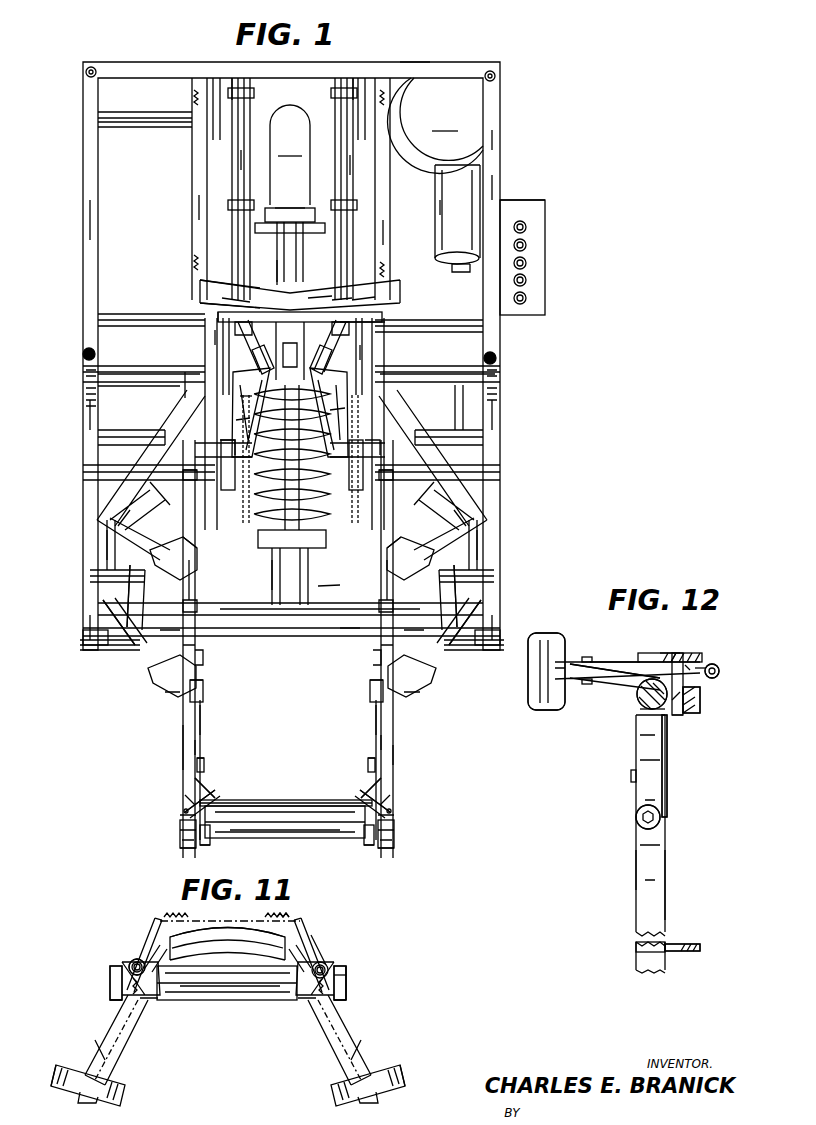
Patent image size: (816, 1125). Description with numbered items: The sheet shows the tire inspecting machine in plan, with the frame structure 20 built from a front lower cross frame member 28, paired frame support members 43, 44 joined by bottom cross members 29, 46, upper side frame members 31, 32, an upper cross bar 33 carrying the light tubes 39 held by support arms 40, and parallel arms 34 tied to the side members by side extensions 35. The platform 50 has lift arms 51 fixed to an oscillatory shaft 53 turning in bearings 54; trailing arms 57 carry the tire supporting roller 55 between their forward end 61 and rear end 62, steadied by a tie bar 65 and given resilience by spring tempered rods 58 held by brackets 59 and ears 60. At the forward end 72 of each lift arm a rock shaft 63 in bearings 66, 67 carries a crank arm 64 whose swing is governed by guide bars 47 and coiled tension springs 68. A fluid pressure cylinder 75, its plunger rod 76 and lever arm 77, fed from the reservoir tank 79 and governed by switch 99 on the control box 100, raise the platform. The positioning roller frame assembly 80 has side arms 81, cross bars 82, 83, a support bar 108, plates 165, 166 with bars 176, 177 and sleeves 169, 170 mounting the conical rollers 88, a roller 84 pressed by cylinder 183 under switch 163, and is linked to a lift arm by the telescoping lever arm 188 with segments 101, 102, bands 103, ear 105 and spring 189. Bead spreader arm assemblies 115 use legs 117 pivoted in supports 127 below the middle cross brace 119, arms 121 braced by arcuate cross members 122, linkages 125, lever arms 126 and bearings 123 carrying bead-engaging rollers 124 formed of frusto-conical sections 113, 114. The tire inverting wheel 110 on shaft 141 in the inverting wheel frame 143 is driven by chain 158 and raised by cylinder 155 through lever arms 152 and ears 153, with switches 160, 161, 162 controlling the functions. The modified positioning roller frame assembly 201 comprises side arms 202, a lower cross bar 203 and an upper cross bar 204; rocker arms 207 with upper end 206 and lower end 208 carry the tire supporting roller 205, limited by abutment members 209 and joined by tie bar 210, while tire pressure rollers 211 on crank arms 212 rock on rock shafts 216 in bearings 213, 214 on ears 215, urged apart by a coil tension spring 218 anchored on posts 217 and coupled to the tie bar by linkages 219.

In FIG. 1, the frame structure 20 is at (502, 142).
In FIG. 1, the front lower cross frame member 28 is at (346, 640).
In FIG. 1, the bottom cross member 29 is at (130, 315).
In FIG. 1, the upper side frame member 31 is at (85, 413).
In FIG. 1, the upper side frame member 32 is at (86, 218).
In FIG. 1, the upper cross bar 33 is at (414, 70).
In FIG. 1, the parallel arm 34 is at (192, 208).
In FIG. 1, the side extension 35 is at (126, 378).
In FIG. 1, the tube 39 is at (85, 76).
In FIG. 1, the support arm 40 is at (84, 360).
In FIG. 1, the frame support member 43 is at (268, 597).
In FIG. 1, the frame support member 44 is at (329, 576).
In FIG. 1, the bottom cross member 46 is at (132, 128).
In FIG. 1, the guide bar 47 is at (214, 796).
In FIG. 1, the platform 50 is at (180, 736).
In FIG. 1, the lift arm 51 is at (181, 758).
In FIG. 1, the oscillatory shaft 53 is at (345, 616).
In FIG. 1, the bearing 54 is at (90, 622).
In FIG. 1, the tire supporting roller 55 is at (295, 832).
In FIG. 1, the trailing arm 57 is at (203, 778).
In FIG. 1, the spring tempered rod 58 is at (200, 717).
In FIG. 1, the bracket 59 is at (204, 690).
In FIG. 1, the ear 60 is at (204, 766).
In FIG. 1, the forward end 61 is at (202, 846).
In FIG. 1, the rear end 62 is at (193, 745).
In FIG. 1, the rock shaft 63 is at (180, 845).
In FIG. 1, the crank arm 64 is at (180, 831).
In FIG. 1, the tie bar 65 is at (285, 803).
In FIG. 1, the bearing 66 is at (178, 817).
In FIG. 1, the bearing 67 is at (186, 855).
In FIG. 1, the coiled tension spring 68 is at (185, 797).
In FIG. 1, the forward end 72 is at (185, 811).
In FIG. 1, the fluid pressure cylinder 75 is at (468, 207).
In FIG. 1, the piston-equipped plunger rod 76 is at (462, 262).
In FIG. 1, the lever arm 77 is at (466, 410).
In FIG. 1, the reservoir tank 79 is at (445, 121).
In FIG. 1, the positioning roller frame assembly 80 is at (222, 290).
In FIG. 1, the side arm 81 is at (215, 305).
In FIG. 1, the cross bar 82 is at (215, 336).
In FIG. 1, the cross bar 83 is at (341, 290).
In FIG. 1, the tire supporting roller 84 is at (245, 387).
In FIG. 1, the conical roller 88 is at (290, 403).
In FIG. 1, the switch 99 is at (527, 298).
In FIG. 1, the control box 100 is at (545, 212).
In FIG. 1, the segment 101 is at (196, 580).
In FIG. 1, the segment 102 is at (205, 657).
In FIG. 1, the band 103 is at (230, 550).
In FIG. 1, the ear 105 is at (178, 702).
In FIG. 1, the support bar 108 is at (288, 285).
In FIG. 1, the tire inverting wheel 110 is at (268, 560).
In FIG. 1, the frusto-conical section 113 is at (170, 640).
In FIG. 1, the frusto-conical section 114 is at (178, 550).
In FIG. 1, the bead spreader arm assembly 115 is at (107, 545).
In FIG. 1, the leg 117 is at (120, 530).
In FIG. 1, the middle cross brace 119 is at (160, 490).
In FIG. 1, the arm 121 is at (100, 560).
In FIG. 1, the arcuate cross member 122 is at (115, 576).
In FIG. 1, the bearing 123 is at (160, 580).
In FIG. 1, the bead-engaging roller 124 is at (195, 545).
In FIG. 1, the linkage 125 is at (120, 592).
In FIG. 1, the lever arm 126 is at (88, 478).
In FIG. 1, the support 127 is at (86, 440).
In FIG. 1, the shaft 141 is at (372, 448).
In FIG. 1, the inverting wheel frame 143 is at (139, 392).
In FIG. 1, the lever arm 152 is at (243, 155).
In FIG. 1, the ear 153 is at (240, 78).
In FIG. 1, the fluid-pressure cylinder 155 is at (290, 147).
In FIG. 1, the sprocket chain 158 is at (225, 447).
In FIG. 1, the switch 160 is at (527, 280).
In FIG. 1, the switch 161 is at (527, 263).
In FIG. 1, the switch 162 is at (527, 245).
In FIG. 1, the switch 163 is at (527, 227).
In FIG. 1, the elongated plate 165 is at (363, 290).
In FIG. 1, the elongated plate 166 is at (215, 320).
In FIG. 1, the sleeve 169 is at (370, 350).
In FIG. 1, the sleeve 170 is at (200, 378).
In FIG. 1, the bar 176 is at (320, 290).
In FIG. 1, the bar 177 is at (235, 291).
In FIG. 1, the fluid pressure cylinder 183 is at (288, 200).
In FIG. 1, the telescoping lever arm 188 is at (197, 650).
In FIG. 1, the coiled tension spring 189 is at (193, 97).
In FIG. 11, the positioning roller frame assembly 201 is at (348, 988).
In FIG. 12, the positioning roller frame assembly 201 is at (635, 870).
In FIG. 11, the side arm 202 is at (110, 982).
In FIG. 12, the side arm 202 is at (635, 895).
In FIG. 12, the lower cross bar 203 is at (690, 947).
In FIG. 11, the upper cross bar 204 is at (240, 938).
In FIG. 12, the upper cross bar 204 is at (697, 656).
In FIG. 11, the tire supporting roller 205 is at (226, 1002).
In FIG. 12, the tire supporting roller 205 is at (643, 700).
In FIG. 12, the upper end 206 is at (645, 712).
In FIG. 11, the rocker arm 207 is at (150, 1002).
In FIG. 12, the rocker arm 207 is at (670, 755).
In FIG. 12, the lower end 208 is at (666, 817).
In FIG. 11, the abutment member 209 is at (115, 1000).
In FIG. 12, the abutment member 209 is at (633, 777).
In FIG. 11, the tie bar 210 is at (322, 946).
In FIG. 12, the tie bar 210 is at (701, 705).
In FIG. 11, the tire pressure roller 211 is at (58, 1088).
In FIG. 12, the tire pressure roller 211 is at (534, 698).
In FIG. 11, the crank arm 212 is at (95, 1055).
In FIG. 12, the crank arm 212 is at (610, 663).
In FIG. 11, the bearing 213 is at (128, 968).
In FIG. 12, the bearing 213 is at (668, 652).
In FIG. 11, the bearing 214 is at (340, 975).
In FIG. 12, the ear 215 is at (694, 714).
In FIG. 11, the rock shaft 216 is at (130, 960).
In FIG. 12, the rock shaft 216 is at (690, 660).
In FIG. 11, the post 217 is at (154, 922).
In FIG. 12, the post 217 is at (705, 668).
In FIG. 11, the coil tension spring 218 is at (286, 920).
In FIG. 12, the coil tension spring 218 is at (720, 672).
In FIG. 11, the linkage 219 is at (132, 1010).
In FIG. 12, the linkage 219 is at (625, 680).